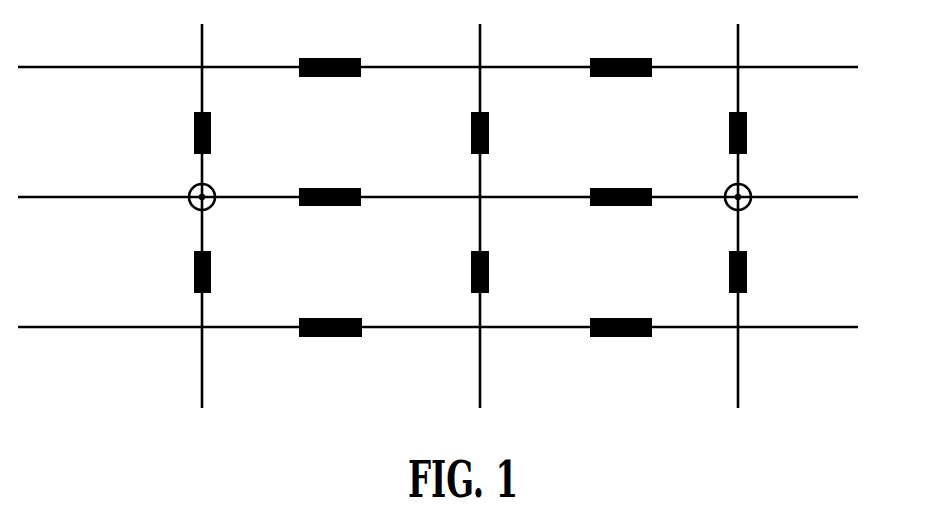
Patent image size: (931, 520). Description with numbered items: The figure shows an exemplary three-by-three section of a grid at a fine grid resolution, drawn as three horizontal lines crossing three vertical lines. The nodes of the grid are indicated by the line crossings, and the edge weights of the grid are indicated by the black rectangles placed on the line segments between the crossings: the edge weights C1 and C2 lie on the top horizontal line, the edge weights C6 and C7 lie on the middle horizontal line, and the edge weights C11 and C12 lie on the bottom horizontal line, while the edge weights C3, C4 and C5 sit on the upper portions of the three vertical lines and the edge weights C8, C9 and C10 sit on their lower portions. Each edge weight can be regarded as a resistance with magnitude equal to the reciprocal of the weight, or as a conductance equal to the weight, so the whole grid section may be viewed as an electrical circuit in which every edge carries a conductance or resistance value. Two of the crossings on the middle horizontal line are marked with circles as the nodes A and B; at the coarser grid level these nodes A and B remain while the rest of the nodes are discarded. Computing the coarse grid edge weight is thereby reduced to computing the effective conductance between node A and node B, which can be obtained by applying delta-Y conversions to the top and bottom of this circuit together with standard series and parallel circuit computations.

The edge weight C1 is at (330, 46).
The edge weight C2 is at (621, 46).
The edge weight C3 is at (178, 127).
The edge weight C4 is at (458, 127).
The edge weight C5 is at (761, 127).
The edge weight C6 is at (330, 175).
The edge weight C7 is at (621, 175).
The edge weight C8 is at (178, 263).
The edge weight C9 is at (458, 264).
The edge weight C10 is at (768, 264).
The edge weight C11 is at (333, 308).
The edge weight C12 is at (622, 308).
The node A is at (187, 183).
The node B is at (750, 183).